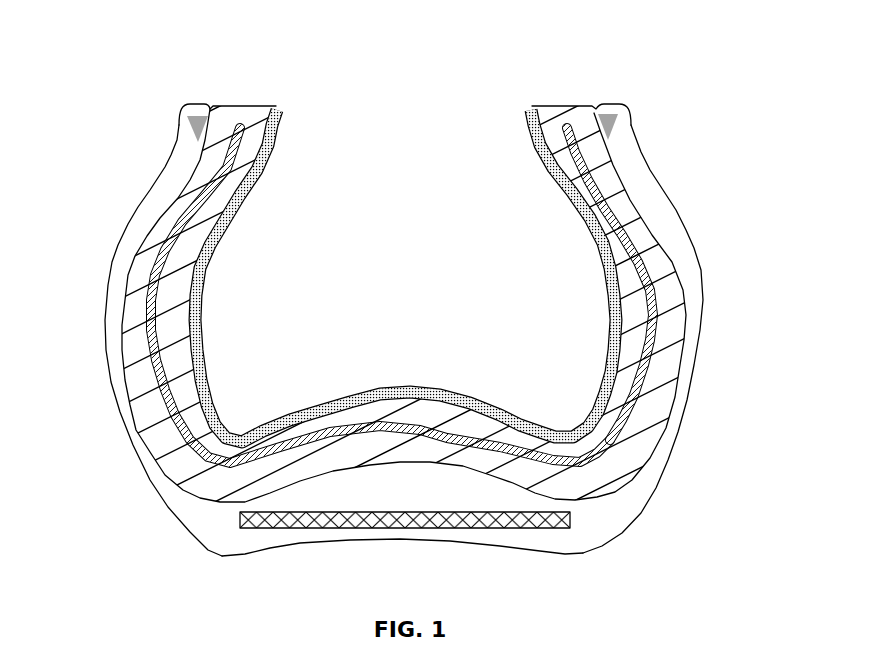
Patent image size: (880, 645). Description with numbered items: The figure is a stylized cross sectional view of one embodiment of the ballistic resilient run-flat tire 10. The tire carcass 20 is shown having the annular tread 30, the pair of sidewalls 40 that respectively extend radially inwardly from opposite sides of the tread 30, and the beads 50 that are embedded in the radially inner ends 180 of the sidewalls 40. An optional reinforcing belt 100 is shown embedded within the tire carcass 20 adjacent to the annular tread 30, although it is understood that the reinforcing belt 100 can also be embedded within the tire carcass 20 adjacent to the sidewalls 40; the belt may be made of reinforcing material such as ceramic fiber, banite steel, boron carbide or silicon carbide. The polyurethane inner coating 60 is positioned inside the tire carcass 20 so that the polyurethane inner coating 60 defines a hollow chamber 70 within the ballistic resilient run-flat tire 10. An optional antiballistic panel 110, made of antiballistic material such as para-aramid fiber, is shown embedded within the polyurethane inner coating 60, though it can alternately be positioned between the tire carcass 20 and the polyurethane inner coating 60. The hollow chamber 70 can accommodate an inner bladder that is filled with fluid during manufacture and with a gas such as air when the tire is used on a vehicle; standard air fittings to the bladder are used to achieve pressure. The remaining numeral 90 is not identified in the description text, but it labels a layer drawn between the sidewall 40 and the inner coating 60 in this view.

The ballistic resilient run-flat tire 10 is at (440, 325).
The tire carcass 20 is at (655, 492).
The annular tread 30 is at (407, 540).
The sidewalls 40 is at (113, 277).
The beads 50 is at (185, 120).
The polyurethane inner coating 60 is at (147, 340).
The hollow chamber 70 is at (328, 205).
The cushion layer 90 is at (675, 397).
The reinforcing belt 100 is at (251, 522).
The antiballistic panel 110 is at (610, 187).
The radially inner ends 180 is at (197, 105).